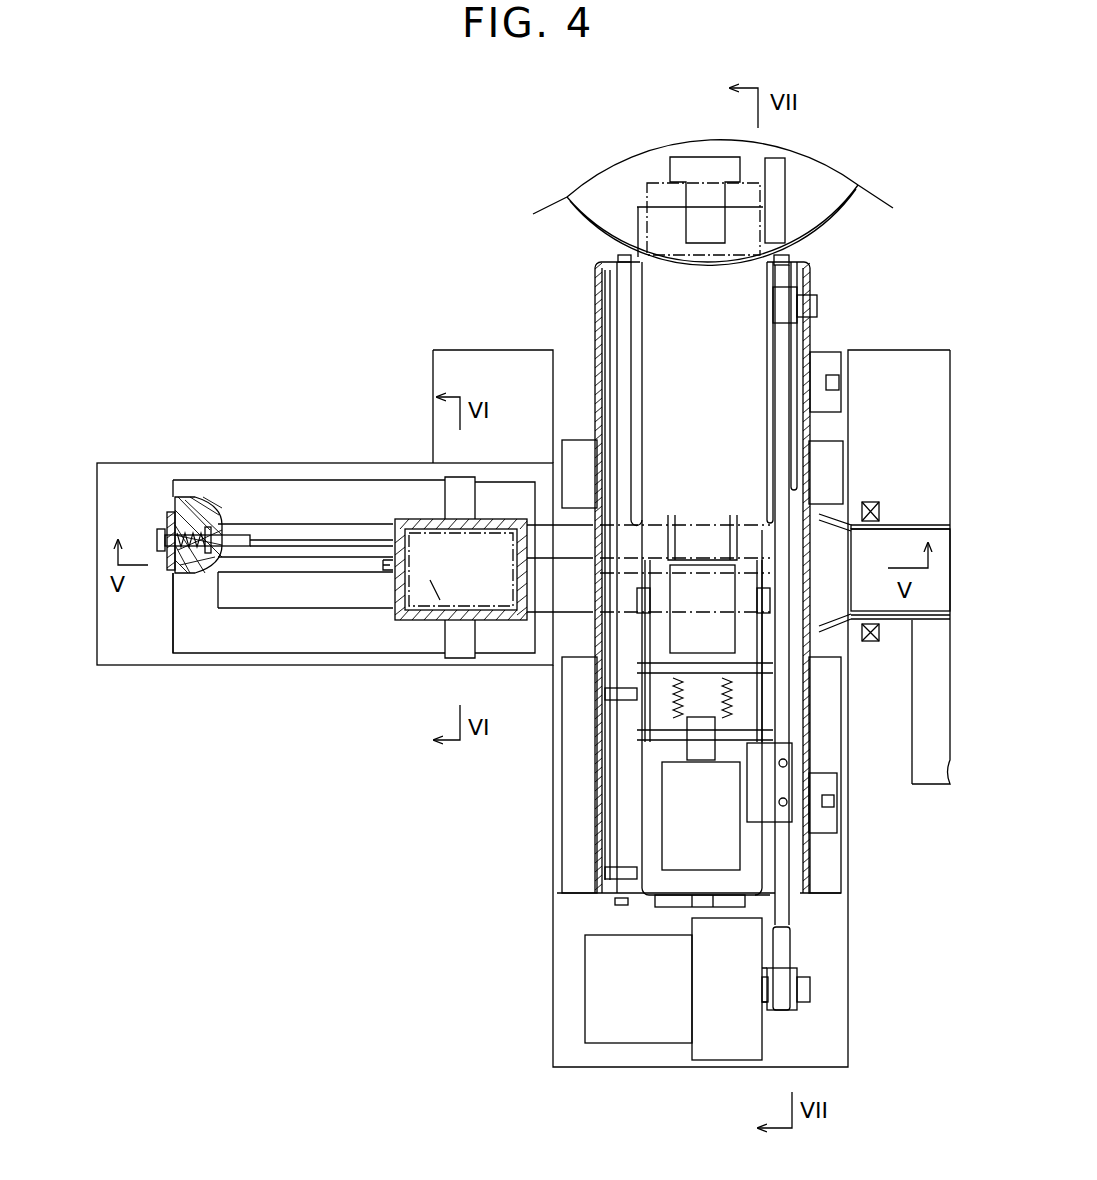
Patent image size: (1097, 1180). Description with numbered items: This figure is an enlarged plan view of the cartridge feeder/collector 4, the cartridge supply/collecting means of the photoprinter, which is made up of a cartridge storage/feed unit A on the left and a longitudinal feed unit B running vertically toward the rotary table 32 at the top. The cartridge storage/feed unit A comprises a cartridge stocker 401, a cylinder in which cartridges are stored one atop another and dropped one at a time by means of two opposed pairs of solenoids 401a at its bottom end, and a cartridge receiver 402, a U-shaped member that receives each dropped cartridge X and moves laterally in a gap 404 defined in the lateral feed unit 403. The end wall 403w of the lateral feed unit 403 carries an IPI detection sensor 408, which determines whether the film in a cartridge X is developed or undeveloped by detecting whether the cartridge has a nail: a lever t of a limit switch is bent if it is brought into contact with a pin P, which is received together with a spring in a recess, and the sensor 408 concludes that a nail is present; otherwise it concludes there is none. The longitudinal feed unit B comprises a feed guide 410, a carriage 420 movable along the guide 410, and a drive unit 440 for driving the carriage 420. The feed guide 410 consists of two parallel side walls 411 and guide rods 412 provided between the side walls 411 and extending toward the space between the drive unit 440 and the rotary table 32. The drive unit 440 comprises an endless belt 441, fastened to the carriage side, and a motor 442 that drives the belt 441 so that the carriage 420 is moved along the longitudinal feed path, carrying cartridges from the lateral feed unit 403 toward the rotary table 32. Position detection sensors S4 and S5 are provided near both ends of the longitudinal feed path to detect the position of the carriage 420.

The cartridge feeder/collector 4 is at (403, 332).
The rotary table 32 is at (570, 185).
The cartridge storage/feed unit A is at (245, 392).
The longitudinal feed unit B is at (552, 873).
The IPI detection sensor 408 is at (160, 490).
The lever t is at (165, 538).
The lateral feed unit 403 is at (295, 505).
The gap 404 is at (341, 556).
The end wall 403w is at (193, 620).
The pin P is at (163, 548).
The cartridge stocker 401 is at (390, 572).
The cartridge receiver 402 is at (380, 566).
The cartridge X is at (425, 590).
The solenoids 401a is at (458, 643).
The guide rods 412 is at (623, 362).
The side walls 411 is at (597, 743).
The feed guide 410 is at (590, 800).
The endless belt 441 is at (785, 362).
The position detection sensor S5 is at (830, 382).
The position detection sensor S4 is at (827, 800).
The carriage 420 is at (637, 918).
The motor 442 is at (713, 1010).
The drive unit 440 is at (795, 1027).